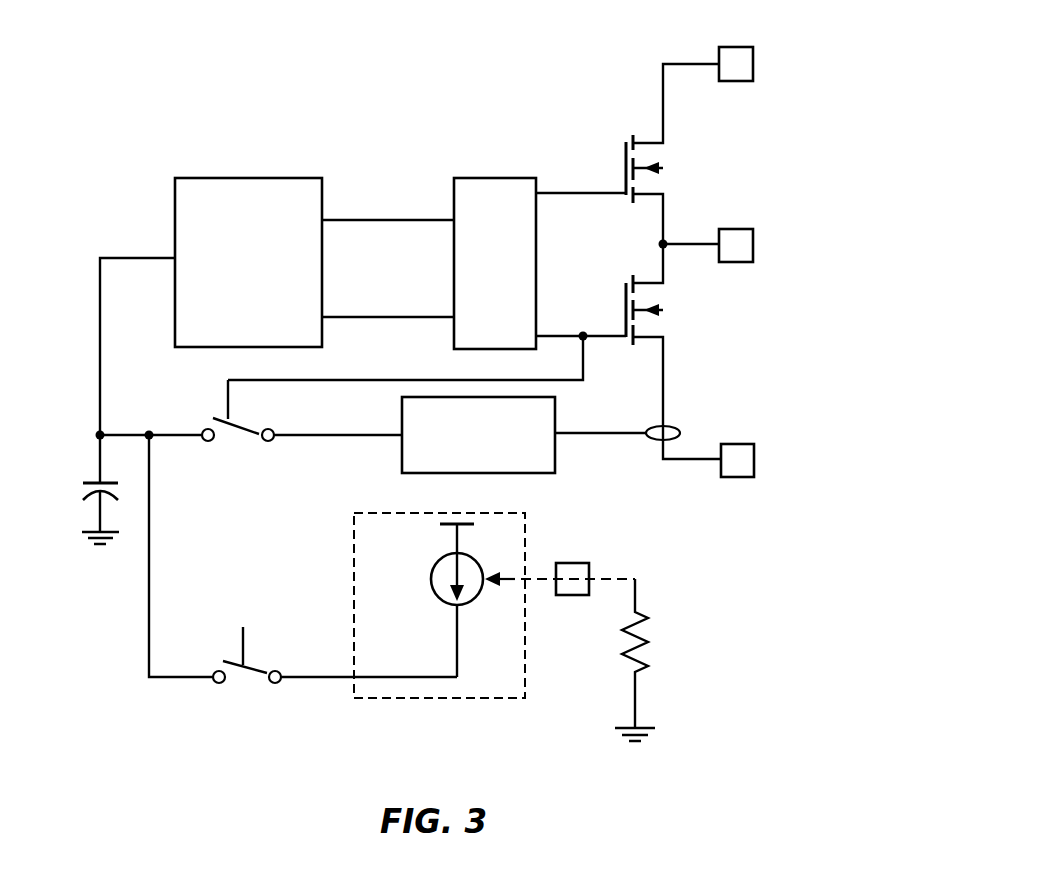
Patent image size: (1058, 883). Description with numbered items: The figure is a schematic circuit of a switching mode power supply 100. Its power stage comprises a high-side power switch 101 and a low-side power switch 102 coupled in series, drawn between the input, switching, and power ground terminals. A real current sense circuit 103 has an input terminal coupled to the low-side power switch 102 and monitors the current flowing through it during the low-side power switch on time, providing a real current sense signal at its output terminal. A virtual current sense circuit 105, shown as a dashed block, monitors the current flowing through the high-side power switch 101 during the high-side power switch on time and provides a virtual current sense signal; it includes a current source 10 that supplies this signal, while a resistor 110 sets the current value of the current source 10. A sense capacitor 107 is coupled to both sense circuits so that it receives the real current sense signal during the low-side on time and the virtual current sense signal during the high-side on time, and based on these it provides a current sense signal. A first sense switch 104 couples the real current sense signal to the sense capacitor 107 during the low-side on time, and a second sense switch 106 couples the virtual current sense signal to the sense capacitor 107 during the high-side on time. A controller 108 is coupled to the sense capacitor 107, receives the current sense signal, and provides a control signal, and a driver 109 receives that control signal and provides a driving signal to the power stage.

The switching mode power supply 100 is at (186, 109).
The high-side power switch 101 is at (670, 153).
The low-side power switch 102 is at (672, 308).
The real current sense circuit 103 is at (566, 455).
The first sense switch 104 is at (237, 447).
The virtual current sense circuit 105 is at (452, 700).
The second sense switch 106 is at (243, 688).
The sense capacitor 107 is at (76, 490).
The controller 108 is at (172, 288).
The driver 109 is at (453, 255).
The resistor 110 is at (652, 657).
The current source 10 is at (430, 591).